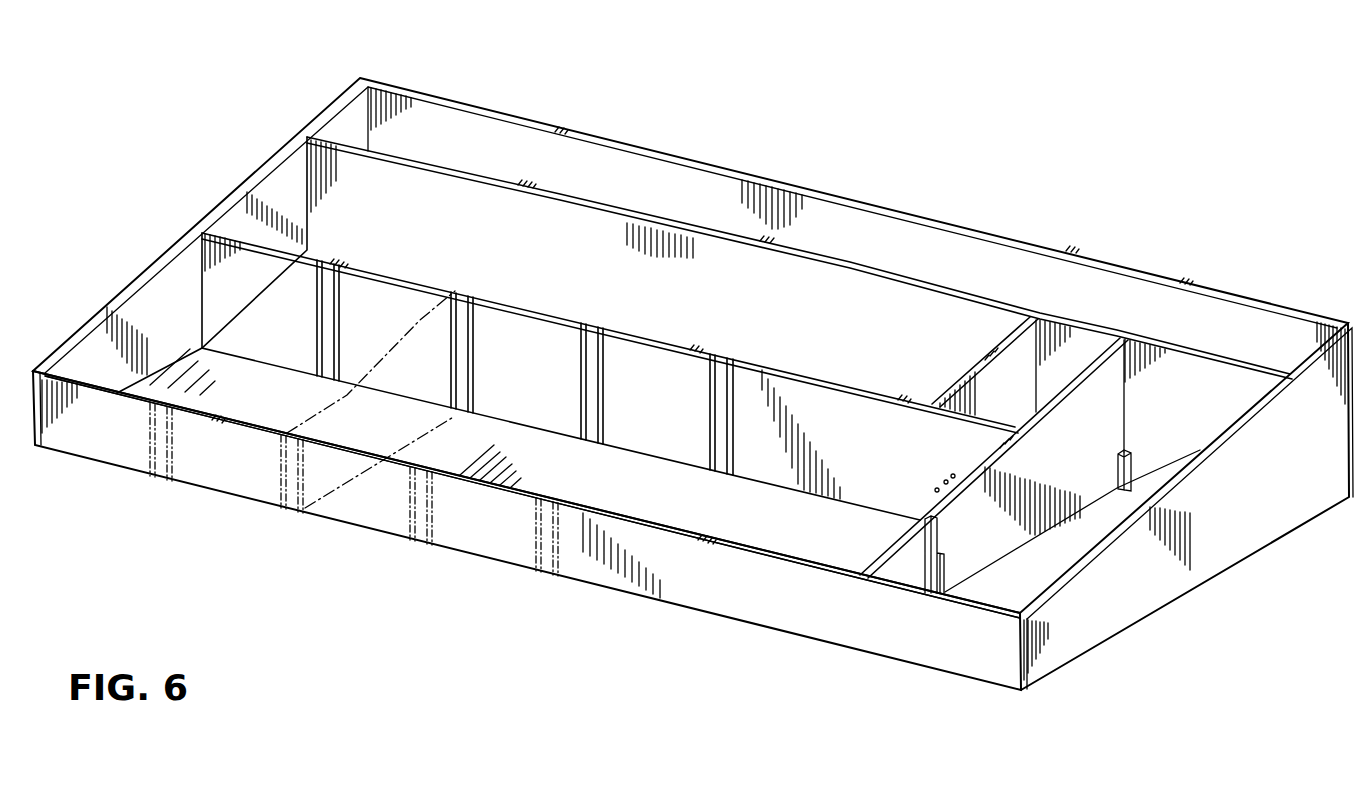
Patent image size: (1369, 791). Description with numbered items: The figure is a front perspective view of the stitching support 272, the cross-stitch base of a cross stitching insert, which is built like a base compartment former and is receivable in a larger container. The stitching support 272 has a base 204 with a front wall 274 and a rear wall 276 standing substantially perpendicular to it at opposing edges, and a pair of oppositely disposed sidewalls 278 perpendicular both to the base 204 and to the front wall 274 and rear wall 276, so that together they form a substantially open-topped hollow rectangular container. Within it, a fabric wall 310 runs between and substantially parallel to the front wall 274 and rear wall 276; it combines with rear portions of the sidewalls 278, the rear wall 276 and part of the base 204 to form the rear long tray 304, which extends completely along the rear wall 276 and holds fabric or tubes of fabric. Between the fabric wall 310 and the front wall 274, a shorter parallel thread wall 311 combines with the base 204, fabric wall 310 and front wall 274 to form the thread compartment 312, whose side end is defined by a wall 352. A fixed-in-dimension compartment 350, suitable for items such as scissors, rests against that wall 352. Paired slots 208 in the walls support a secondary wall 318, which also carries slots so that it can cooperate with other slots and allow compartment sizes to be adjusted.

The base 204 is at (924, 686).
The slots 208 is at (325, 325).
The stitching support 272 is at (1278, 284).
The front wall 274 is at (792, 607).
The rear wall 276 is at (922, 261).
The sidewalls 278 is at (194, 338).
The rear long tray 304 is at (582, 168).
The fabric wall 310 is at (714, 305).
The thread wall 311 is at (877, 453).
The thread compartment 312 is at (360, 206).
The secondary wall 318 is at (337, 463).
The fixed-in-dimension compartment 350 is at (1077, 348).
The wall 352 is at (1024, 410).